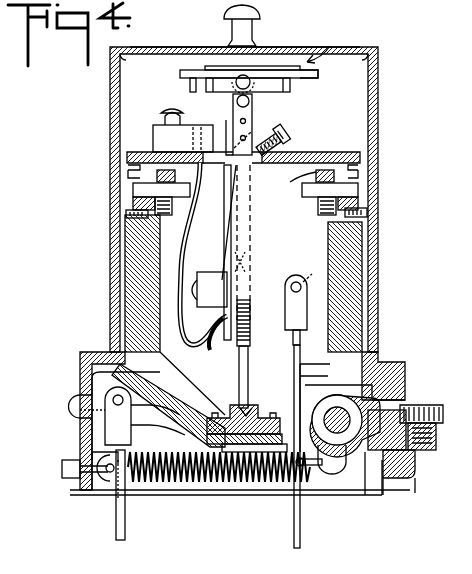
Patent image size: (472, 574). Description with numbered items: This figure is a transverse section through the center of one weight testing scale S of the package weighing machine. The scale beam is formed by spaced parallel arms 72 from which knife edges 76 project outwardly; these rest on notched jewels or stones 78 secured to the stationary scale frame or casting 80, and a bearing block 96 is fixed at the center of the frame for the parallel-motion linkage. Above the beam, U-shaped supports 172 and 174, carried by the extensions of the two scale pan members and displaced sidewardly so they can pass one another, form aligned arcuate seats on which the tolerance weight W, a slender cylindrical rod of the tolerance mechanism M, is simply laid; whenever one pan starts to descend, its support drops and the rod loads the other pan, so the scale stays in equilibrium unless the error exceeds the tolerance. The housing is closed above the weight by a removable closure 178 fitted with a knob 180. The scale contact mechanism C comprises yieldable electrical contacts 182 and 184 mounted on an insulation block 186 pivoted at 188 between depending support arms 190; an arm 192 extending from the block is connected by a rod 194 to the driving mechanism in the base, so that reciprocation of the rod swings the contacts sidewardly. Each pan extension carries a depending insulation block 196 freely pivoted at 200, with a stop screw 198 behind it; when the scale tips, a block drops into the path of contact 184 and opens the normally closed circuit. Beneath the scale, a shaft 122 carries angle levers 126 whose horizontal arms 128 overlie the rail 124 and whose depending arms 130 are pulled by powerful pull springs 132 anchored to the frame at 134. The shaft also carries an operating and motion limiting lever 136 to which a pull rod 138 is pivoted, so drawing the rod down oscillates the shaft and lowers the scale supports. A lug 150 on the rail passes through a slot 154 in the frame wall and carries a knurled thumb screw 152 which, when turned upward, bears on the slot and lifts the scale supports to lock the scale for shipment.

The weight testing scale S is at (225, 199).
The knob 180 is at (262, 16).
The closure 178 is at (177, 47).
The U-shaped support 172 is at (279, 69).
The U-shaped support 174 is at (186, 73).
The tolerance mechanism M is at (328, 40).
The tolerance weight W is at (320, 74).
The pivot 200 is at (252, 102).
The insulation block 196 is at (226, 124).
The stop screw 198 is at (288, 136).
The scale beam arm 72 is at (234, 154).
The knife edge 76 is at (140, 191).
The notched jewel 78 is at (126, 213).
The scale frame 80 is at (140, 285).
The electrical contact 184 is at (205, 243).
The insulation block 186 is at (200, 293).
The electrical contact 182 is at (232, 212).
The scale contact mechanism C is at (240, 240).
The support arm 190 is at (238, 262).
The pivot 188 is at (250, 342).
The bearing block 96 is at (243, 486).
The arm 192 is at (285, 302).
The rod 194 is at (294, 516).
The operating and motion limiting lever 136 is at (74, 412).
The pull spring 132 is at (200, 486).
The spring anchorage 134 is at (56, 480).
The pull rod 138 is at (116, 518).
The horizontal arm 128 is at (385, 362).
The angle lever 126 is at (375, 372).
The shaft 122 is at (340, 432).
The depending arm 130 is at (333, 476).
The slot 154 is at (404, 392).
The knurled thumb screw 152 is at (426, 404).
The lug 150 is at (436, 452).
The rail 124 is at (384, 496).